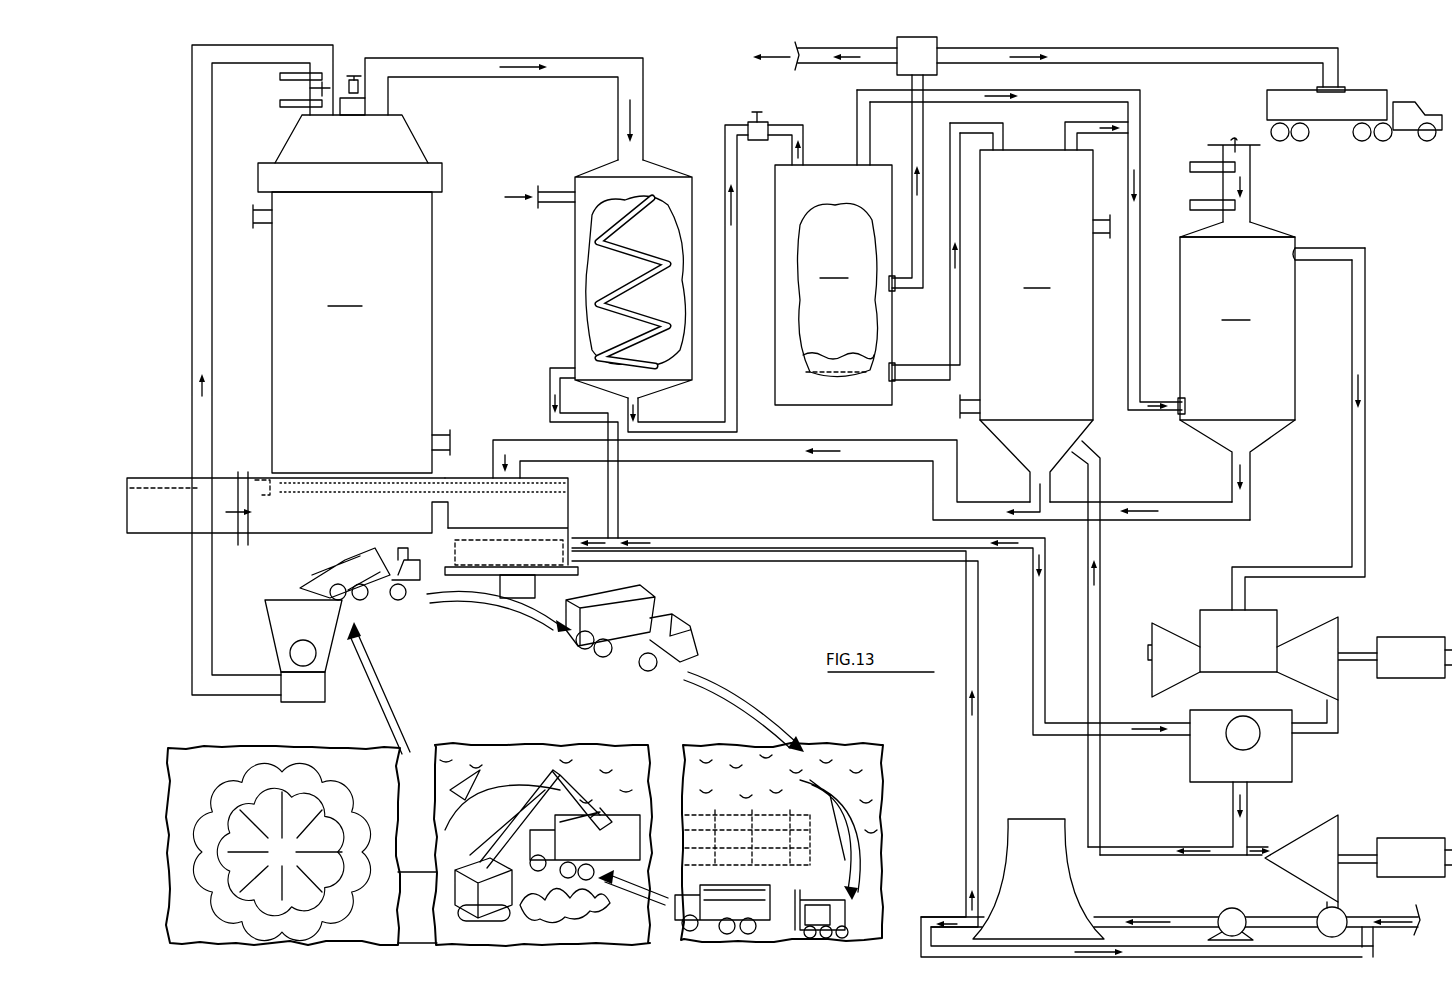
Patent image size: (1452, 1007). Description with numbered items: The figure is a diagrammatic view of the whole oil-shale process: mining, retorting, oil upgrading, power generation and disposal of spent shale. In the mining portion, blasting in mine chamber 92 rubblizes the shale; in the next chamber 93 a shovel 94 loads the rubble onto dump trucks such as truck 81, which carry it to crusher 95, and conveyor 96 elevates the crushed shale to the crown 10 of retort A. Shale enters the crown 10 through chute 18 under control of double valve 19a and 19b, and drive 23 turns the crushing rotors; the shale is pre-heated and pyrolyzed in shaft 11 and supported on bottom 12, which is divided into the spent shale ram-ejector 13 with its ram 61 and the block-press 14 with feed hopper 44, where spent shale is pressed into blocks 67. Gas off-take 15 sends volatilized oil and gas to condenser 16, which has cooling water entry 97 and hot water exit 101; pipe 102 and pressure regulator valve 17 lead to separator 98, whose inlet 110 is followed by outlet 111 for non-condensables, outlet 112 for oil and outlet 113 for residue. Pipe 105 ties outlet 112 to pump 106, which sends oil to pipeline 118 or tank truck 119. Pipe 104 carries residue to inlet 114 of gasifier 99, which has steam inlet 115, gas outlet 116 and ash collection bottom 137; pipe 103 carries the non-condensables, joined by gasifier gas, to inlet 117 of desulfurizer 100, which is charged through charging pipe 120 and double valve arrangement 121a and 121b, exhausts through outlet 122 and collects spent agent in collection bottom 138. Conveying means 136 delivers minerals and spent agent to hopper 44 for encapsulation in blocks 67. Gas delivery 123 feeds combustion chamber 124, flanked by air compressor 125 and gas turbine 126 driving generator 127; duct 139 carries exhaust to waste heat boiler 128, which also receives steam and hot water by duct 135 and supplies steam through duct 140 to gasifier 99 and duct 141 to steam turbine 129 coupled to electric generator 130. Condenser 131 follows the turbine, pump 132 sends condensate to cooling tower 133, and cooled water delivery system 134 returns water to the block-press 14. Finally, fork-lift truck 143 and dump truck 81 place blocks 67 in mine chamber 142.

The crown 10 is at (418, 139).
The shaft 11 is at (432, 370).
The bottom 12 is at (308, 542).
The spent shale ram-ejector 13 is at (234, 471).
The block-press 14 is at (474, 568).
The gas off-take 15 is at (492, 88).
The condenser 16 is at (572, 240).
The pressure regulator valve 17 is at (762, 115).
The chute 18 is at (310, 88).
The double valve 19a is at (280, 78).
The double valve 19b is at (287, 108).
The drive 23 is at (358, 75).
The feed hopper 44 is at (565, 508).
The ram 61 is at (262, 476).
The blocks 67 is at (518, 561).
The dump truck 81 is at (386, 561).
The mine chamber 92 is at (366, 748).
The chamber 93 is at (636, 747).
The shovel 94 is at (512, 886).
The crusher 95 is at (264, 597).
The conveyor 96 is at (212, 388).
The cooling water entry 97 is at (550, 186).
The separator 98 is at (833, 285).
The gasifier 99 is at (1035, 285).
The desulfurizer 100 is at (1237, 321).
The hot water exit 101 is at (548, 389).
The pipe 102 is at (722, 272).
The pipe 103 is at (971, 88).
The pipe 104 is at (954, 327).
The pipe 105 is at (928, 210).
The pump 106 is at (917, 56).
The inlet 110 is at (800, 134).
The outlet 111 is at (857, 152).
The outlet 112 is at (897, 288).
The outlet 113 is at (898, 368).
The inlet 114 is at (1000, 139).
The steam inlet 115 is at (1089, 447).
The gas outlet 116 is at (1062, 137).
The inlet 117 is at (1173, 398).
The pipeline 118 is at (818, 48).
The tank truck 119 is at (1364, 94).
The charging pipe 120 is at (1256, 183).
The double valve arrangement 121a is at (1196, 160).
The double valve arrangement 121b is at (1190, 188).
The outlet 122 is at (1304, 246).
The gas delivery 123 is at (1366, 437).
The combustion chamber 124 is at (1238, 641).
The air compressor 125 is at (1185, 596).
The gas turbine 126 is at (1308, 630).
The generator 127 is at (1400, 646).
The waste heat boiler 128 is at (1229, 713).
The steam turbine 129 is at (1308, 816).
The electric generator 130 is at (1400, 842).
The condenser 131 is at (1340, 910).
The pump 132 is at (1231, 909).
The cooling tower 133 is at (1076, 874).
The cooled water delivery system 134 is at (973, 672).
The duct 135 is at (790, 539).
The conveying means 136 is at (841, 479).
The mineral (ash) collection bottom 137 is at (1018, 458).
The collection bottom 138 is at (1208, 450).
The duct 139 is at (1338, 724).
The duct 140 is at (1136, 844).
The duct 141 is at (1264, 838).
The mine chamber 142 is at (874, 736).
The fork-lift truck 143 is at (870, 934).